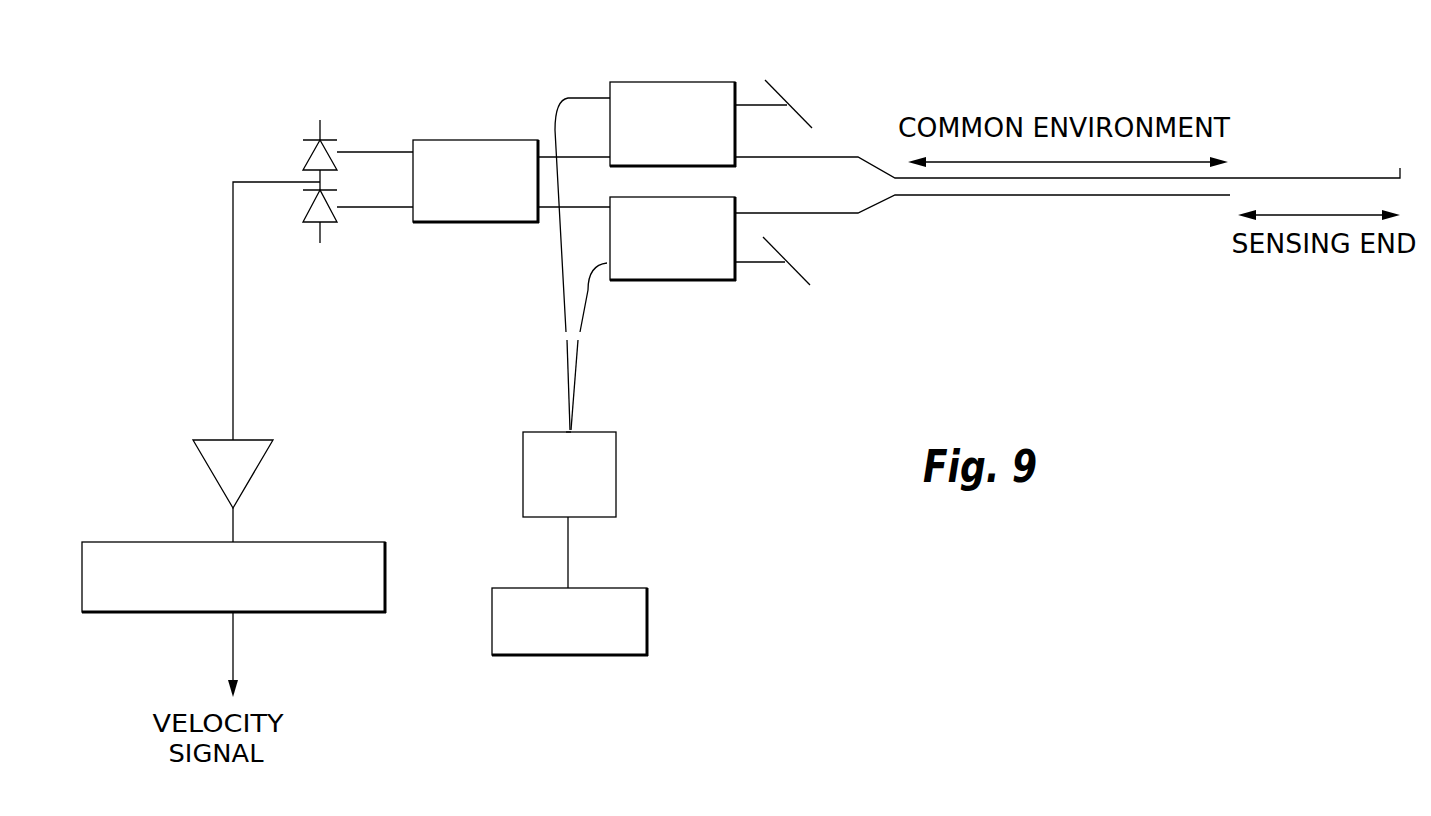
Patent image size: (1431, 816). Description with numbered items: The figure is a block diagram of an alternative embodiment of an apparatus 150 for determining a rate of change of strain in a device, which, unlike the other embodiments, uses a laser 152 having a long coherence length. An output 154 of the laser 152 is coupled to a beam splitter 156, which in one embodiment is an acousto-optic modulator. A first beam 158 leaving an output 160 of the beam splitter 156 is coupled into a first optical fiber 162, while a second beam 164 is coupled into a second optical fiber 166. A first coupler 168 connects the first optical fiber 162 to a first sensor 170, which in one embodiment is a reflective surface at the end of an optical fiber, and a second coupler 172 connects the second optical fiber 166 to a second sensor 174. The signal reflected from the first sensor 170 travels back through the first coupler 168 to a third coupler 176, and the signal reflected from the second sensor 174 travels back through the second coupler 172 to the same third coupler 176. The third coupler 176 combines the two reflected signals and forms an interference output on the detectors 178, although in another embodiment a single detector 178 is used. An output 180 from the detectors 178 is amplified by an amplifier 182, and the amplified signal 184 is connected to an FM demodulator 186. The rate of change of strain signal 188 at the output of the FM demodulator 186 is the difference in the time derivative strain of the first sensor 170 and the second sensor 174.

The apparatus 150 is at (843, 53).
The laser 152 is at (647, 622).
The output of the laser 154 is at (570, 588).
The beam splitter 156 is at (616, 488).
The first beam 158 is at (580, 375).
The output of the beam splitter 160 is at (572, 430).
The first optical fiber 162 is at (587, 285).
The second beam 164 is at (567, 387).
The second optical fiber 166 is at (562, 288).
The first coupler 168 is at (703, 280).
The first sensor 170 is at (1232, 195).
The second coupler 172 is at (705, 82).
The second sensor 174 is at (1400, 168).
The third coupler 176 is at (440, 140).
The detectors 178 is at (303, 158).
The output from the detectors 180 is at (247, 182).
The amplifier 182 is at (255, 477).
The amplified signal 184 is at (235, 527).
The FM demodulator 186 is at (385, 582).
The rate of change of strain signal 188 is at (235, 680).